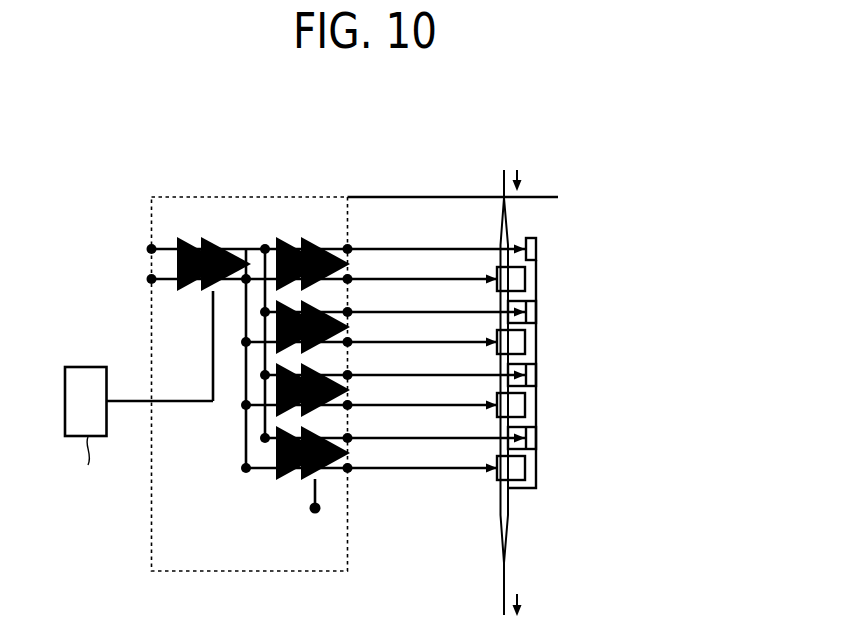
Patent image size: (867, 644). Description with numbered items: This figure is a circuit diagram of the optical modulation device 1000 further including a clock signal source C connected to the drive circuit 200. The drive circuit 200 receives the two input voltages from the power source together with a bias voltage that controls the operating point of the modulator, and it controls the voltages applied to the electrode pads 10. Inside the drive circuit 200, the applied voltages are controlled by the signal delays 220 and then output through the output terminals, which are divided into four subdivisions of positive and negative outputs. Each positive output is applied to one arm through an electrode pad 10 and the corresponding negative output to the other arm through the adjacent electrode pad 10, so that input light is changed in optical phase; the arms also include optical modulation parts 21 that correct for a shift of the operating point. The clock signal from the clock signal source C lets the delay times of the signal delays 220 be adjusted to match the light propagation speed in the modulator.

The optical modulation device 1000 is at (652, 77).
The drive circuit 200 is at (320, 197).
The signal delays 220 is at (288, 245).
The electrode pads 10 is at (525, 283).
The optical modulation parts 21 is at (500, 517).